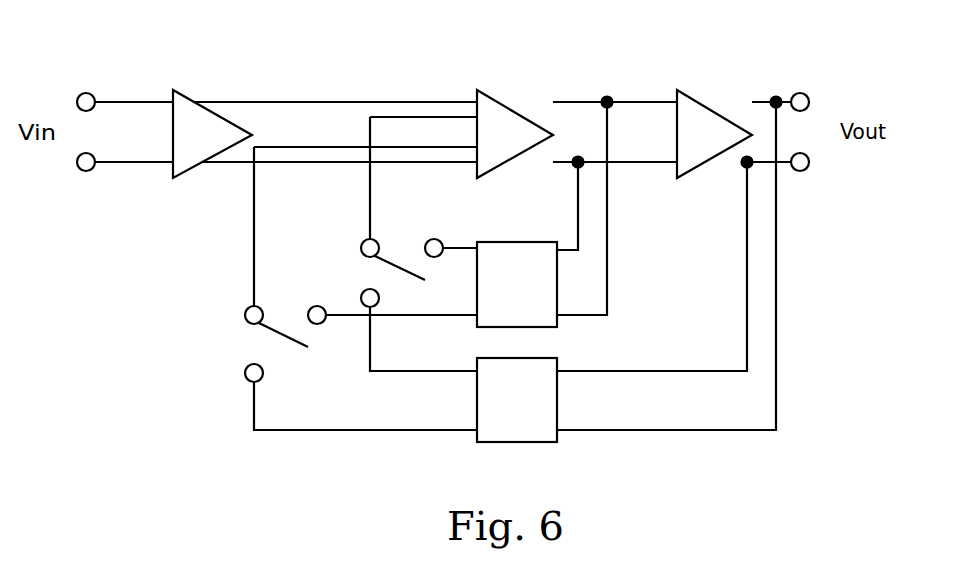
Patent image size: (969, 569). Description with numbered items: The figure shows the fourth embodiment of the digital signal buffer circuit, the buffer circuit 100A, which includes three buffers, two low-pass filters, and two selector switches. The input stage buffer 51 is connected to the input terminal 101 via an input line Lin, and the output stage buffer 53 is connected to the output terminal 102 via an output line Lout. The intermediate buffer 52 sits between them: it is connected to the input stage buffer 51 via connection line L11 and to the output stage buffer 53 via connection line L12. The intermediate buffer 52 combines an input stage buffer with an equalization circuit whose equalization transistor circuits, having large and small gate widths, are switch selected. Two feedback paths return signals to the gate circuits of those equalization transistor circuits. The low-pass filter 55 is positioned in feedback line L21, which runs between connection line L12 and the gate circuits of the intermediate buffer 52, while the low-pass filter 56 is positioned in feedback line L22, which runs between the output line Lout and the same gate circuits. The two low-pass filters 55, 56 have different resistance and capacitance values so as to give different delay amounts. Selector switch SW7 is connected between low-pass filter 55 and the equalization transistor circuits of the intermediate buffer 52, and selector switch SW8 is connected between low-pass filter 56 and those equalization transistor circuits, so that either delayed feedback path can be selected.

The input terminal 101 is at (81, 93).
The output terminal 102 is at (806, 93).
The input stage buffer 51 is at (178, 92).
The intermediate buffer 52 is at (478, 92).
The output stage buffer 53 is at (680, 92).
The low-pass filter 55 is at (490, 242).
The low-pass filter 56 is at (518, 358).
The buffer circuit 100A is at (536, 90).
The connection line L11 is at (355, 100).
The connection line L12 is at (628, 100).
The feedback line L21 is at (592, 233).
The feedback line L22 is at (630, 371).
The input line Lin is at (130, 164).
The output line Lout is at (755, 98).
The selector switch SW7 is at (419, 292).
The selector switch SW8 is at (337, 344).